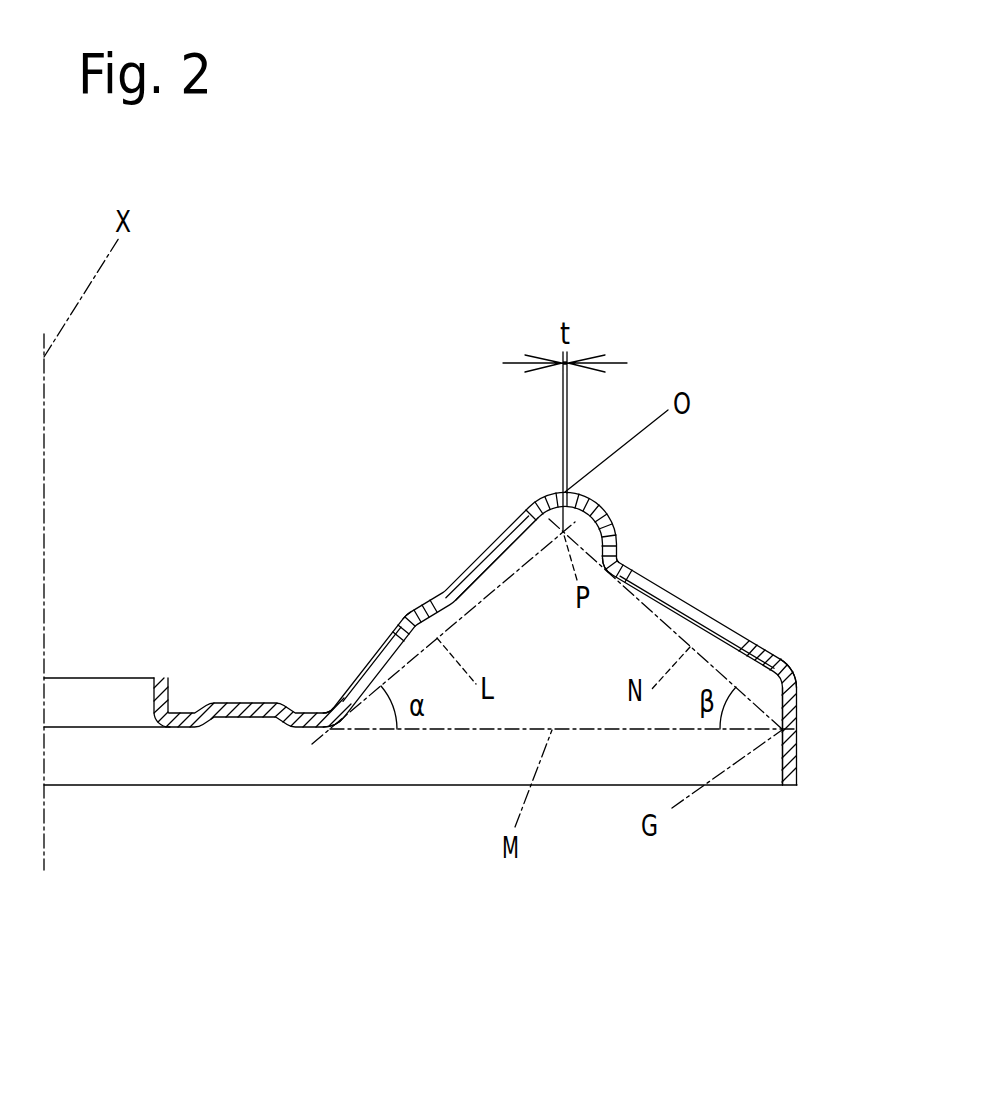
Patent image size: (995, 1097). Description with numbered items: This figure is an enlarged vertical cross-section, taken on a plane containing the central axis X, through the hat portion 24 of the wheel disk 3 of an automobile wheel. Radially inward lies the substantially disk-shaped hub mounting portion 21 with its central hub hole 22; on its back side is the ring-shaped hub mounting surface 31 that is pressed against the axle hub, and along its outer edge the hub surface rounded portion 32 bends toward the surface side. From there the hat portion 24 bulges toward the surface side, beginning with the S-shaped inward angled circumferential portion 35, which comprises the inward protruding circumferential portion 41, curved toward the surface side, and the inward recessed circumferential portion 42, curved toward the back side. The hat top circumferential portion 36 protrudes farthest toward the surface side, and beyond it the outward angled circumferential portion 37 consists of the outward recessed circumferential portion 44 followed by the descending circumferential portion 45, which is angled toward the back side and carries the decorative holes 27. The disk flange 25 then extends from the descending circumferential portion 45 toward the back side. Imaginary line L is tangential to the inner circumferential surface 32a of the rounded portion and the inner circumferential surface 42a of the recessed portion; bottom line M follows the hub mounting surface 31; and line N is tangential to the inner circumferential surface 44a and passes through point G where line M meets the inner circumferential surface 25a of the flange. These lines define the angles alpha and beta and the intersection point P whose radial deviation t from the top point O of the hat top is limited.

The wheel disk 3 is at (380, 895).
The hub mounting portion 21 is at (218, 705).
The hub hole 22 is at (103, 697).
The hat portion 24 is at (408, 617).
The disk flange 25 is at (790, 760).
The inner circumferential surface of the disk flange 25a is at (782, 750).
The decorative holes 27 is at (685, 610).
The hub mounting surface 31 is at (307, 728).
The hub surface rounded portion 32 is at (333, 708).
The inner circumferential surface of the hub surface rounded portion 32a is at (343, 723).
The inward angled circumferential portion 35 is at (367, 667).
The hat top circumferential portion 36 is at (547, 495).
The outward angled circumferential portion 37 is at (770, 650).
The inward protruding circumferential portion 41 is at (397, 630).
The inward recessed circumferential portion 42 is at (493, 597).
The inner circumferential surface of the inward recessed circumferential portion 42a is at (490, 590).
The outward recessed circumferential portion 44 is at (615, 563).
The inner circumferential surface of the outward recessed circumferential portion 44a is at (618, 582).
The descending circumferential portion 45 is at (753, 643).